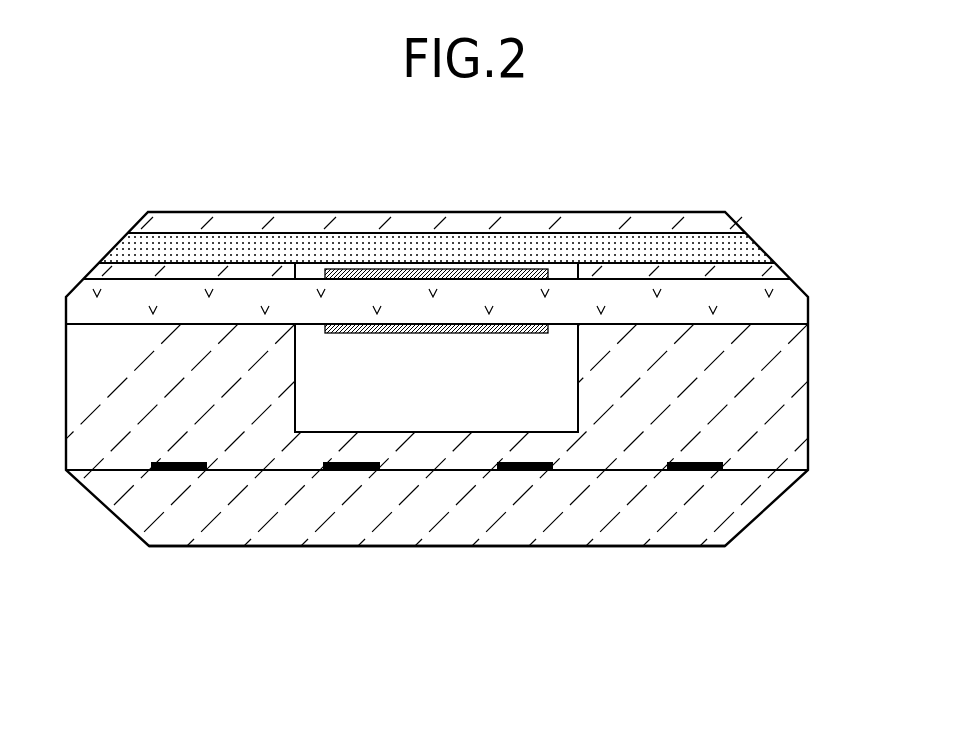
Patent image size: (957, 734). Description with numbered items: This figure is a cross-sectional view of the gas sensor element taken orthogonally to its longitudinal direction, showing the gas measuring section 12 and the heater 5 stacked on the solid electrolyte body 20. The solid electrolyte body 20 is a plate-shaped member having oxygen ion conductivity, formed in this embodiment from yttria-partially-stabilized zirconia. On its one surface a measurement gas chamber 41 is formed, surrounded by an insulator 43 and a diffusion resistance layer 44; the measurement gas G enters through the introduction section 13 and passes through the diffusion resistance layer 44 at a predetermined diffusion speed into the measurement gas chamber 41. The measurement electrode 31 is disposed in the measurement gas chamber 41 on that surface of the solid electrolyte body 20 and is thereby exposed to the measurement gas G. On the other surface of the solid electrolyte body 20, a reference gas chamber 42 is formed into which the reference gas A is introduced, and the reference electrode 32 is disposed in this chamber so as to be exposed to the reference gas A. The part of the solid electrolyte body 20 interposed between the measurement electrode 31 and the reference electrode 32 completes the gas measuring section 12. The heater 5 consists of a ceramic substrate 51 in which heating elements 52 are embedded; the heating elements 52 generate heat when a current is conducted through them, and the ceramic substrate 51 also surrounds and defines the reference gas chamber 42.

The gas measuring section 12 is at (768, 193).
The introduction section 13 is at (173, 236).
The insulator 43 is at (258, 220).
The diffusion resistance layer 44 is at (622, 250).
The measurement gas chamber 41 is at (557, 265).
The measurement gas G is at (298, 259).
The measurement electrode 31 is at (428, 272).
The solid electrolyte body 20 is at (463, 308).
The reference electrode 32 is at (400, 336).
The reference gas chamber 42 is at (467, 404).
The reference gas A is at (330, 394).
The ceramic substrate 51 is at (752, 413).
The heating elements 52 is at (518, 473).
The heater 5 is at (695, 547).